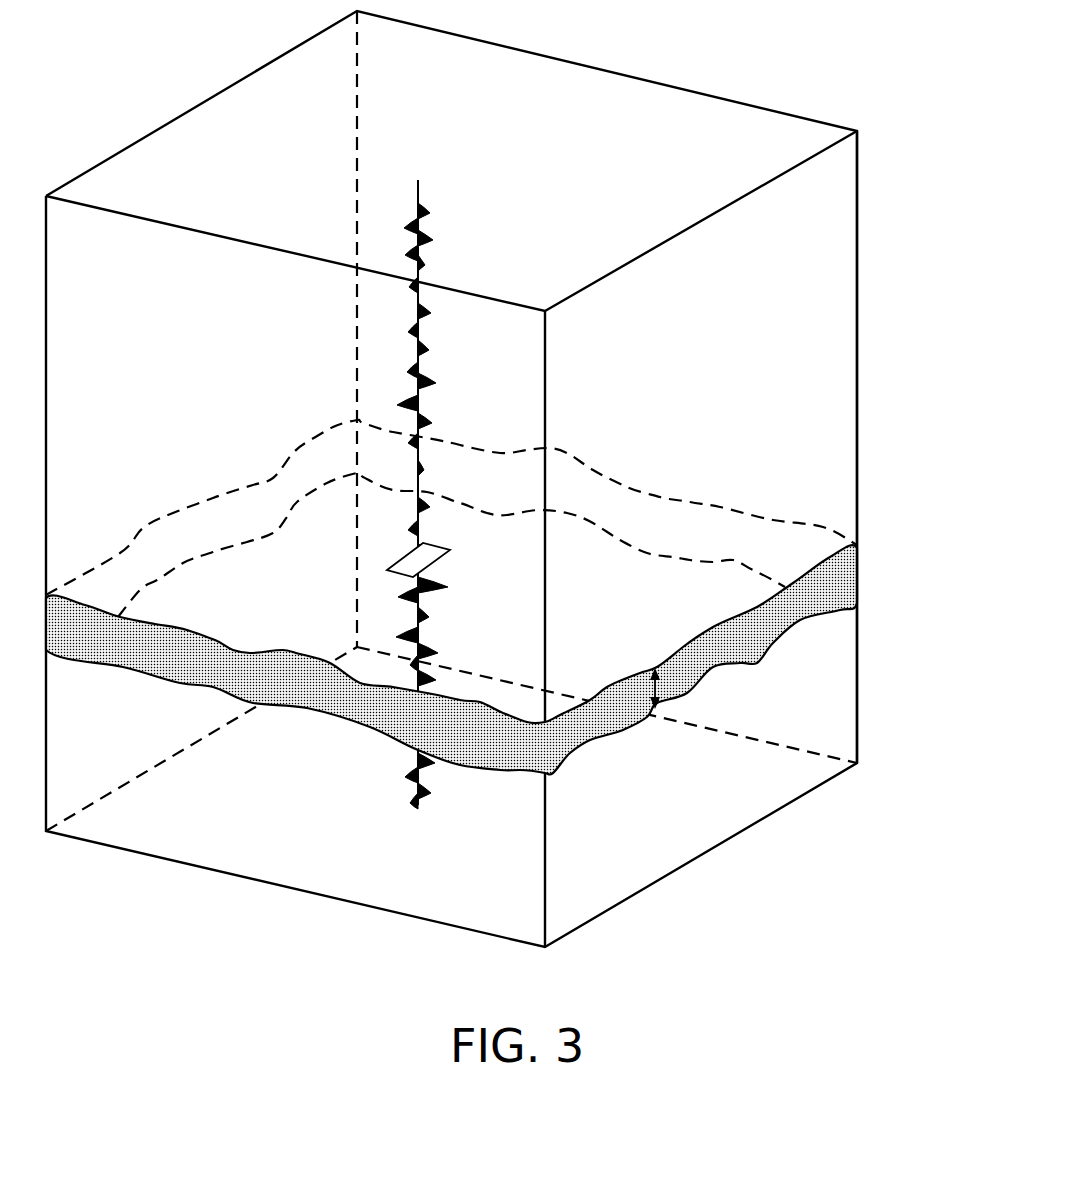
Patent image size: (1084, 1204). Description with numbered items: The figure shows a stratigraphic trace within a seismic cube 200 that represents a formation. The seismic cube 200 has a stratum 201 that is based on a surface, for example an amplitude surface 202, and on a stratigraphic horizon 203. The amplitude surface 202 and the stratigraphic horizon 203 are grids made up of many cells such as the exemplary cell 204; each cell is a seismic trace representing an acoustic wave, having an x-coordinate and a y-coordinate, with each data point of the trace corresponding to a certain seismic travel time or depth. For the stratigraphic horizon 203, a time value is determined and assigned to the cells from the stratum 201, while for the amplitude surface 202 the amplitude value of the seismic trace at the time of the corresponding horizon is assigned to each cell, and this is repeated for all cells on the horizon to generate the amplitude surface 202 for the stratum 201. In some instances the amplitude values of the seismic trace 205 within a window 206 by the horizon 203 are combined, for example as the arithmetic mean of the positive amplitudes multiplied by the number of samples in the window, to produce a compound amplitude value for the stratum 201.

The seismic cube 200 is at (721, 93).
The stratum 201 is at (896, 527).
The amplitude surface 202 is at (451, 518).
The stratigraphic horizon 203 is at (710, 628).
The cell 204 is at (450, 550).
The seismic trace 205 is at (419, 195).
The window 206 is at (655, 717).